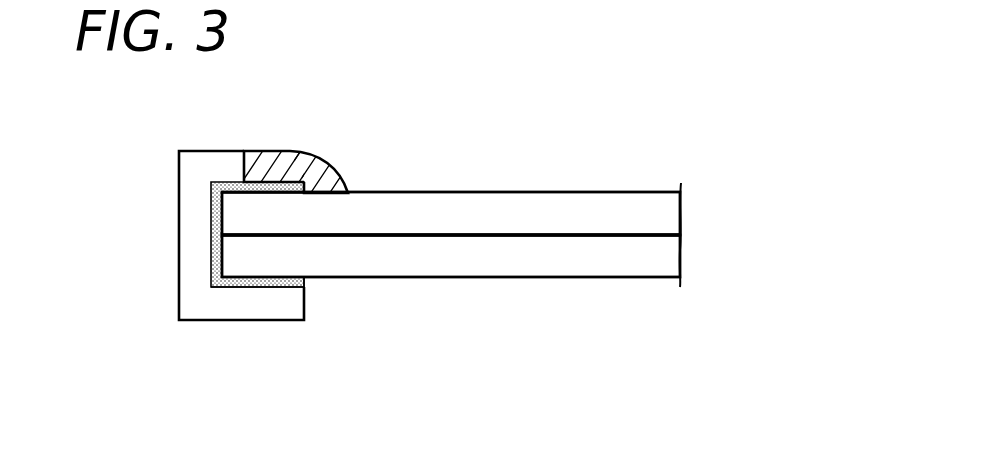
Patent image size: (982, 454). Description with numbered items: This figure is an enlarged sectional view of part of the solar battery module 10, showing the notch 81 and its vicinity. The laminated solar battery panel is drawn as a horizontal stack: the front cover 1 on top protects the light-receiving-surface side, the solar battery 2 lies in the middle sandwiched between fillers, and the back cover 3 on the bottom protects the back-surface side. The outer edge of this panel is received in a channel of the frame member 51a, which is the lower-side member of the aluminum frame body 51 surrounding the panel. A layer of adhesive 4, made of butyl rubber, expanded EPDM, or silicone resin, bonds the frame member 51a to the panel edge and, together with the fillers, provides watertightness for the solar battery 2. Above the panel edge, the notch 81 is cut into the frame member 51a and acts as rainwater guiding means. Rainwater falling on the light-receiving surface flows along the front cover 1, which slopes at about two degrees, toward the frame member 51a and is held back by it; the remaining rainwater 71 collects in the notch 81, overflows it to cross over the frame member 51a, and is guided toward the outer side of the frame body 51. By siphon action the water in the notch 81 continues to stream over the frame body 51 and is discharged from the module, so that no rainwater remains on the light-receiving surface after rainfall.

The solar battery module 10 is at (548, 193).
The front cover 1 is at (667, 215).
The solar battery 2 is at (548, 247).
The back cover 3 is at (675, 263).
The adhesive 4 is at (305, 283).
The frame body 51 is at (241, 242).
The frame member 51a is at (241, 283).
The rainwater 71 is at (330, 178).
The notch 81 is at (288, 137).